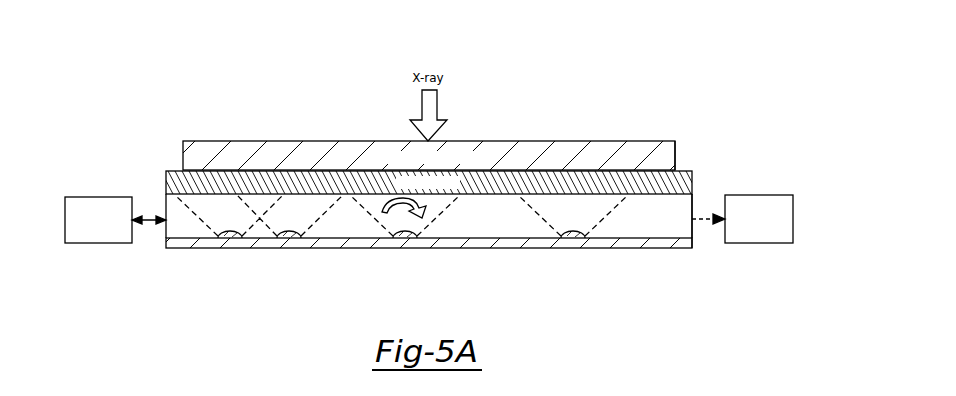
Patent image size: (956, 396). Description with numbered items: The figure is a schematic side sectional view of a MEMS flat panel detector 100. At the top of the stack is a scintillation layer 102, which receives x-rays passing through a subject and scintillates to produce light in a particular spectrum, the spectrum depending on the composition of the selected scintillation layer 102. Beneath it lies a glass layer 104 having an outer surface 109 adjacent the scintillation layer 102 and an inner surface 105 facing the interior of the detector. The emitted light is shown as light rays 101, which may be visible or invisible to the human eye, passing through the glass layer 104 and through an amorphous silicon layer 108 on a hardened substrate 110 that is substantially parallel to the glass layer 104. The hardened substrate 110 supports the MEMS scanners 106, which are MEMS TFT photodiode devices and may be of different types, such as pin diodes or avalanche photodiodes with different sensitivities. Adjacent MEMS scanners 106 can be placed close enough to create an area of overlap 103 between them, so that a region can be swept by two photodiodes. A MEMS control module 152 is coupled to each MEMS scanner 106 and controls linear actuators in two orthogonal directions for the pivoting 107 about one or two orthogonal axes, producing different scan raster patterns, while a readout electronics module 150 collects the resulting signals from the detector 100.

The MEMS flat panel detector 100 is at (675, 96).
The light rays 101 is at (288, 198).
The scintillation layer 102 is at (643, 141).
The area of overlap 103 is at (258, 200).
The glass layer 104 is at (693, 181).
The inner surface 105 is at (663, 195).
The MEMS scanner 106 is at (230, 248).
The pivoting 107 is at (432, 207).
The amorphous silicon layer 108 is at (690, 230).
The outer surface 109 is at (678, 168).
The hardened substrate 110 is at (650, 242).
The readout electronics module 150 is at (762, 195).
The MEMS control module 152 is at (98, 197).